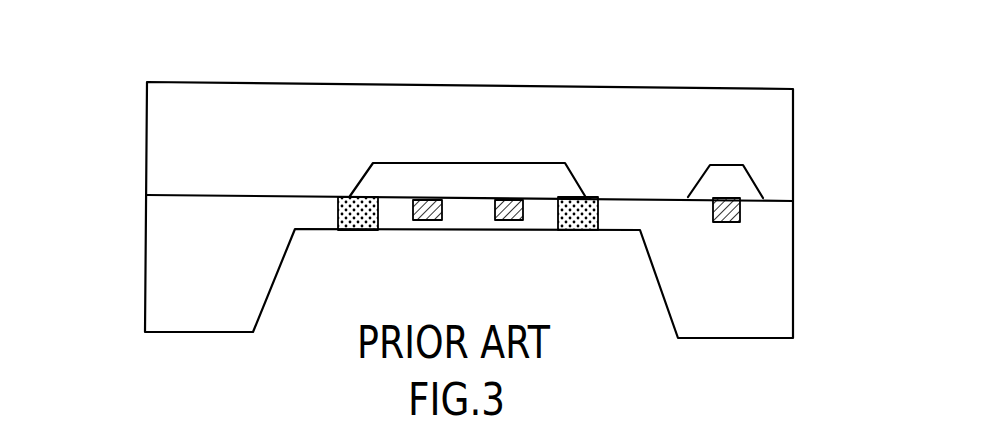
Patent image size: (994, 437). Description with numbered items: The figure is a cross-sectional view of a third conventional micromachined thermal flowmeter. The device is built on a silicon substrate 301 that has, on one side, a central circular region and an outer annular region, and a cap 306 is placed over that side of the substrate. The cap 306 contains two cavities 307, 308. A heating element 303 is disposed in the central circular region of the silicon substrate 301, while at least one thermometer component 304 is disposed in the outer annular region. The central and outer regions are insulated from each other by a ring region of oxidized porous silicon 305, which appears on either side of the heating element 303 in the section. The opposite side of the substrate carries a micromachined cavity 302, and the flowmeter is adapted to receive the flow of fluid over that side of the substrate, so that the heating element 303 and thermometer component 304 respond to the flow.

The silicon substrate 301 is at (168, 292).
The micromachined cavity 302 is at (627, 300).
The heating element 303 is at (510, 217).
The thermometer component 304 is at (733, 225).
The ring region of oxidized porous silicon 305 is at (360, 215).
The cap 306 is at (180, 98).
The cavity 307 is at (438, 183).
The cavity 308 is at (733, 180).